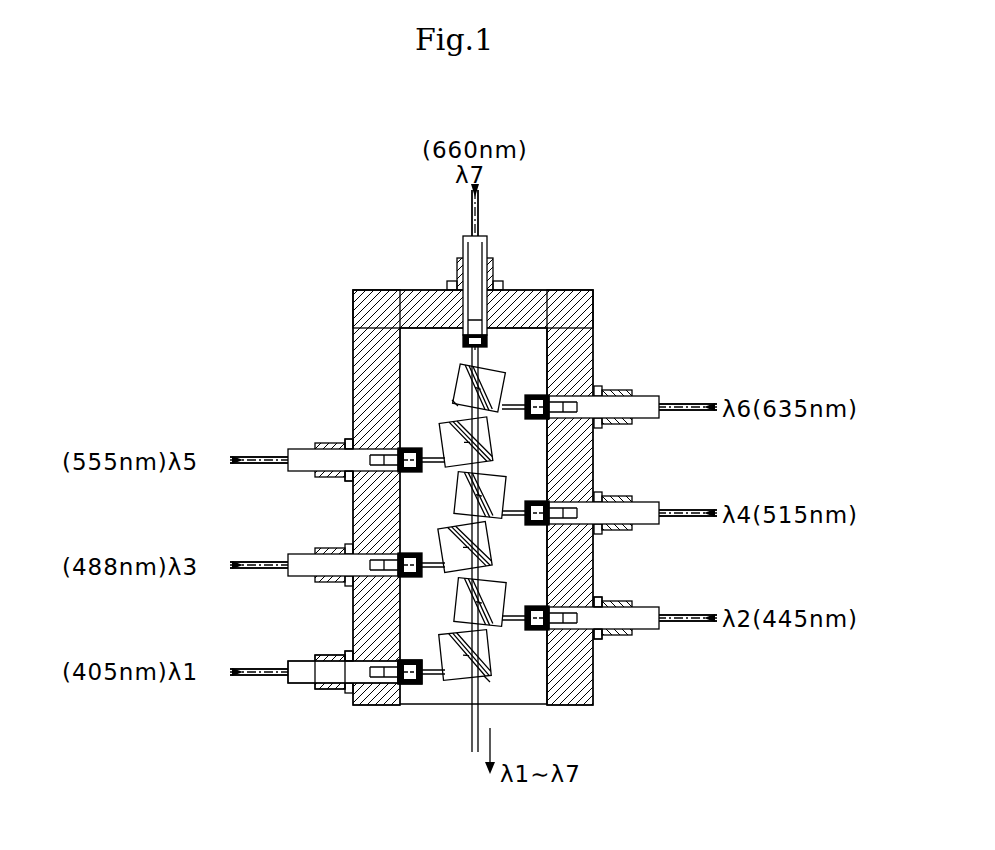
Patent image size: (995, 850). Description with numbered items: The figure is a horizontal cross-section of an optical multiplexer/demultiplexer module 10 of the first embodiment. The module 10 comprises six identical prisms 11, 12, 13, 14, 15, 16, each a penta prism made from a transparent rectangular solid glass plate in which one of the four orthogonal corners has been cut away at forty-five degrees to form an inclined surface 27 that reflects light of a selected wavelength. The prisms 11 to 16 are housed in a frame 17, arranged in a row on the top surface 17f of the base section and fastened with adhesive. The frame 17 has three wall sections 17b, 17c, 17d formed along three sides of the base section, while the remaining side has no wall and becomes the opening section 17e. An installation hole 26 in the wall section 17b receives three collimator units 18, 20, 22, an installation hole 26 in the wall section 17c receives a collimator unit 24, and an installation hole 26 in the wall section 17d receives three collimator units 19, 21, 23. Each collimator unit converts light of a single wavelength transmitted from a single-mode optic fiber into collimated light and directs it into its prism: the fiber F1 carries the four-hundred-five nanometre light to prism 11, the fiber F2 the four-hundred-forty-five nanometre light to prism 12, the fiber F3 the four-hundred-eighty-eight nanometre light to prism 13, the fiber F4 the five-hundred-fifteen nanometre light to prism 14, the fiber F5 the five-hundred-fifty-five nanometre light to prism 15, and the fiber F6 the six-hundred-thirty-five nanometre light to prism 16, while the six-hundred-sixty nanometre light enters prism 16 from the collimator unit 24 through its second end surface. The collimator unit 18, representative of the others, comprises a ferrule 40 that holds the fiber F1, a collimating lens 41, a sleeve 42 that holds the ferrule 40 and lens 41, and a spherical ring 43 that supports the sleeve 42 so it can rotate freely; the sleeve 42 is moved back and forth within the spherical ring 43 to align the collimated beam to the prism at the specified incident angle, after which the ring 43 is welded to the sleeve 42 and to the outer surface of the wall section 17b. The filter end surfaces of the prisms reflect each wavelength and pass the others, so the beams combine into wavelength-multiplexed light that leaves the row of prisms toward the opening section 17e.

The optical multiplexer/demultiplexer module 10 is at (600, 235).
The prism 11 is at (441, 634).
The prism 12 is at (505, 583).
The prism 13 is at (440, 531).
The prism 14 is at (505, 478).
The prism 15 is at (447, 426).
The prism 16 is at (505, 372).
The frame 17 is at (353, 321).
The wall section 17b is at (360, 365).
The wall section 17c is at (560, 296).
The wall section 17d is at (586, 680).
The opening section 17e is at (410, 704).
The top surface 17f is at (532, 672).
The collimator unit 18 is at (330, 687).
The collimator unit 19 is at (614, 635).
The collimator unit 20 is at (325, 583).
The collimator unit 21 is at (614, 530).
The collimator unit 22 is at (325, 478).
The collimator unit 23 is at (614, 424).
The collimator unit 24 is at (495, 270).
The installation hole 26 is at (458, 300).
The inclined surface 27 is at (456, 401).
The ferrule 40 is at (292, 683).
The collimating lens 41 is at (418, 685).
The sleeve 42 is at (318, 688).
The spherical ring 43 is at (345, 655).
The single-mode optic fiber F1 is at (468, 213).
The single-mode optic fiber F2 is at (685, 613).
The single-mode optic fiber F3 is at (262, 560).
The single-mode optic fiber F4 is at (690, 510).
The single-mode optic fiber F5 is at (262, 455).
The single-mode optic fiber F6 is at (680, 402).